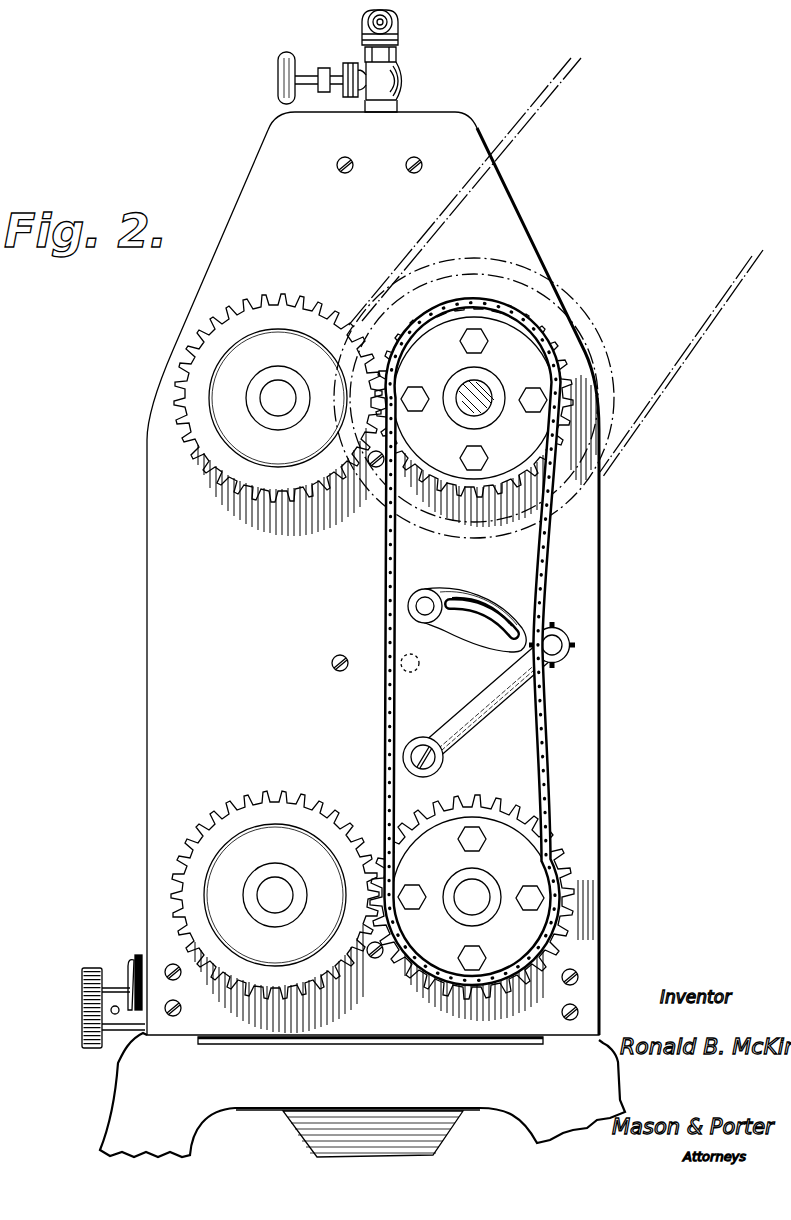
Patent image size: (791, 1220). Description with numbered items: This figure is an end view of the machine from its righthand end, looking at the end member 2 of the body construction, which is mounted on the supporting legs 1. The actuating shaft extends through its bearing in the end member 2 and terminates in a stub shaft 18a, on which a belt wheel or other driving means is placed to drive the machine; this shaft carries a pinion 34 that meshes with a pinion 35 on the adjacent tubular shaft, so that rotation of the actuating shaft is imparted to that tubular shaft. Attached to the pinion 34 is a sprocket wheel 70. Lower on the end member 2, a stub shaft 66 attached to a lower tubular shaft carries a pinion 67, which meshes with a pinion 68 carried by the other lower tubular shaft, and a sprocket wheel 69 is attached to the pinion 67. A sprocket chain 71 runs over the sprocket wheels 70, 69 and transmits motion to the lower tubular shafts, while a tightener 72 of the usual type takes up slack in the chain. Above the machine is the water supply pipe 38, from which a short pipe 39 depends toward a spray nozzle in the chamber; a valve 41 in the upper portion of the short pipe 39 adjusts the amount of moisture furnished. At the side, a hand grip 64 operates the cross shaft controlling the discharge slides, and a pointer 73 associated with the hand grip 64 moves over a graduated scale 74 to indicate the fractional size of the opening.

The supporting legs 1 is at (362, 1095).
The end member 2 is at (455, 551).
The stub shaft 18a is at (488, 392).
The pinion 34 is at (437, 318).
The pinion 35 is at (262, 320).
The pipe 38 is at (362, 20).
The short pipe 39 is at (398, 48).
The valve 41 is at (401, 77).
The hand grip 64 is at (82, 1020).
The stub shaft 66 is at (485, 895).
The pinion 67 is at (520, 810).
The pinion 68 is at (237, 823).
The sprocket wheel 69 is at (472, 897).
The sprocket wheel 70 is at (508, 407).
The sprocket chain 71 is at (537, 567).
The tightener 72 is at (575, 643).
The pointer 73 is at (130, 963).
The scale 74 is at (137, 953).